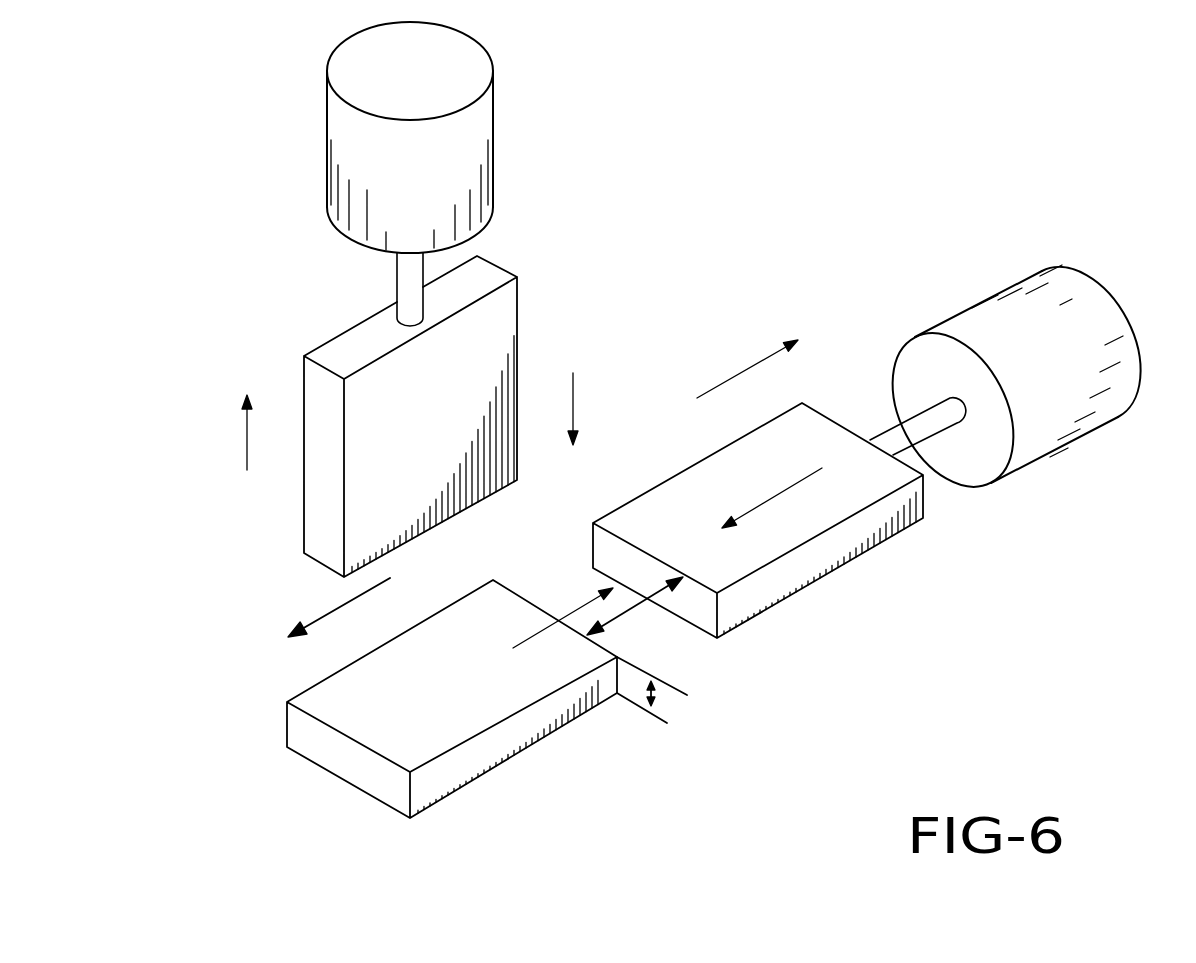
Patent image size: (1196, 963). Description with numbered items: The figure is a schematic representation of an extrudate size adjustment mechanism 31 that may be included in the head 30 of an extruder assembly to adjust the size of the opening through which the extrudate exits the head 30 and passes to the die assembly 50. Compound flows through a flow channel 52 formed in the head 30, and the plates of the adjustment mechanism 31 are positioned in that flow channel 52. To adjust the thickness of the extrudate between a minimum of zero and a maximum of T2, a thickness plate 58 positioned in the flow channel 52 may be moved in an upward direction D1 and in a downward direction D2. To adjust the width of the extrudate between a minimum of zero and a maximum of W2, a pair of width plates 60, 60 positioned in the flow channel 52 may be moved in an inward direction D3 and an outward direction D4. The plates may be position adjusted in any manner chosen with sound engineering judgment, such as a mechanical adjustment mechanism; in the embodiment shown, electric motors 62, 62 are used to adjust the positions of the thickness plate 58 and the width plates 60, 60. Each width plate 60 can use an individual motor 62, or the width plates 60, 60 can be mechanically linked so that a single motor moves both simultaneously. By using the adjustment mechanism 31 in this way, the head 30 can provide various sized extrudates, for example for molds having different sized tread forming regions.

The electric motor 62 is at (345, 142).
The thickness plate 58 is at (328, 475).
The width plate 60 is at (333, 755).
The flow channel 52 is at (522, 505).
The head 30 is at (636, 282).
The extrudate size adjustment mechanism 31 is at (710, 307).
The die assembly 50 is at (937, 726).
The upward direction D1 is at (247, 438).
The downward direction D2 is at (573, 398).
The inward direction D3 is at (543, 630).
The outward direction D4 is at (330, 610).
The maximum width W2 is at (623, 617).
The maximum thickness T2 is at (660, 697).